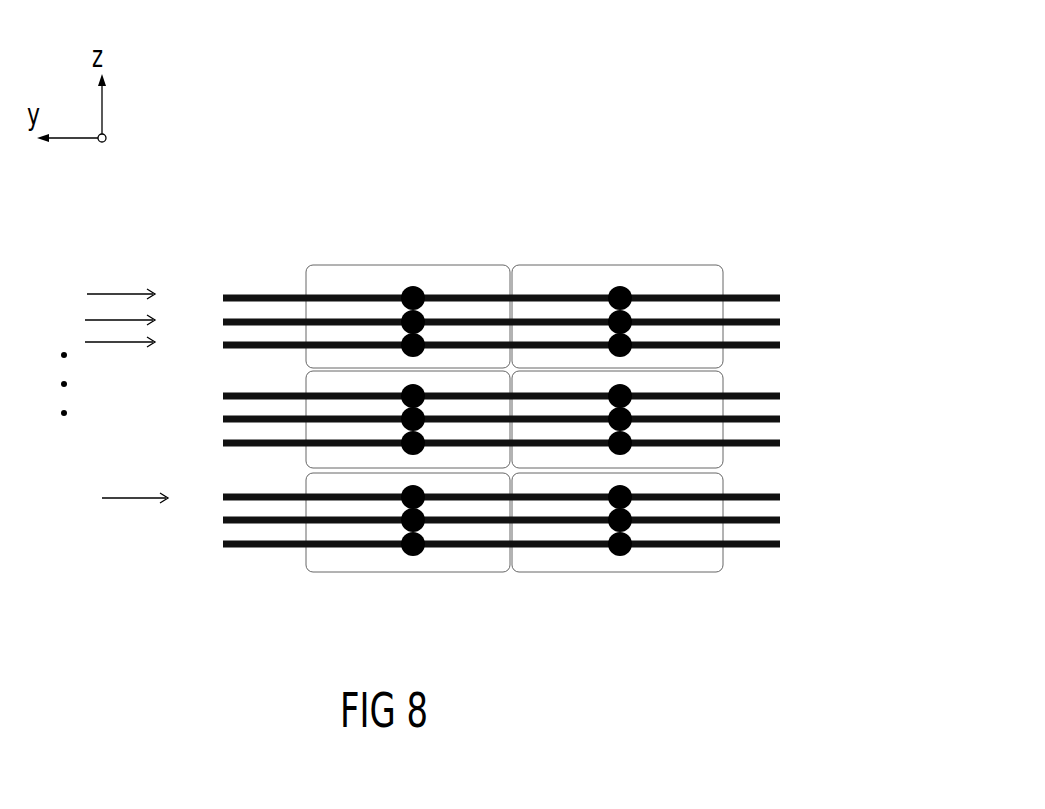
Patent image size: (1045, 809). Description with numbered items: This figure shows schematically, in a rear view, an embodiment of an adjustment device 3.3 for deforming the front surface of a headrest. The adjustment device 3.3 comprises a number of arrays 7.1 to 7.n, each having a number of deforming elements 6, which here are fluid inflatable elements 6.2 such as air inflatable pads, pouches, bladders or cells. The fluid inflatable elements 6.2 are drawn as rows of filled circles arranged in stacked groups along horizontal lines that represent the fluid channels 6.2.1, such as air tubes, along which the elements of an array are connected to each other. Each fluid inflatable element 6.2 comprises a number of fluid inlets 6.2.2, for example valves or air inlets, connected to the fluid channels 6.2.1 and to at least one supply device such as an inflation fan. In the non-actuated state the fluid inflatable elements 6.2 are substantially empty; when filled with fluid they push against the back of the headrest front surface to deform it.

The adjustment device 3.3 is at (586, 343).
The deforming elements 6 is at (586, 343).
The fluid inflatable elements 6.2 is at (455, 277).
The fluid channels 6.2.1 is at (770, 320).
The fluid inlets 6.2.2 is at (634, 330).
The array 7.1 is at (101, 310).
The array 7.n is at (107, 494).